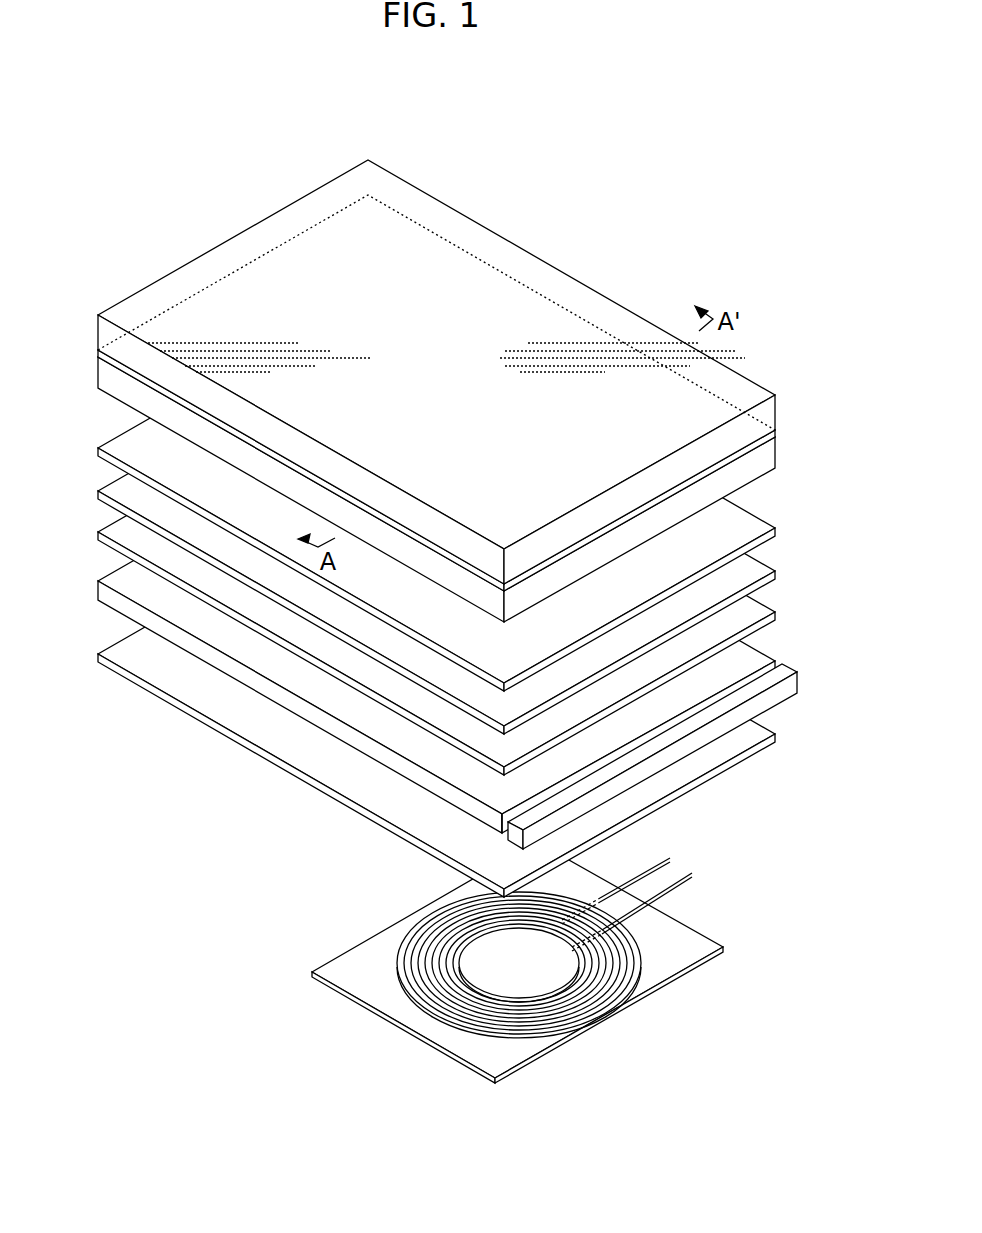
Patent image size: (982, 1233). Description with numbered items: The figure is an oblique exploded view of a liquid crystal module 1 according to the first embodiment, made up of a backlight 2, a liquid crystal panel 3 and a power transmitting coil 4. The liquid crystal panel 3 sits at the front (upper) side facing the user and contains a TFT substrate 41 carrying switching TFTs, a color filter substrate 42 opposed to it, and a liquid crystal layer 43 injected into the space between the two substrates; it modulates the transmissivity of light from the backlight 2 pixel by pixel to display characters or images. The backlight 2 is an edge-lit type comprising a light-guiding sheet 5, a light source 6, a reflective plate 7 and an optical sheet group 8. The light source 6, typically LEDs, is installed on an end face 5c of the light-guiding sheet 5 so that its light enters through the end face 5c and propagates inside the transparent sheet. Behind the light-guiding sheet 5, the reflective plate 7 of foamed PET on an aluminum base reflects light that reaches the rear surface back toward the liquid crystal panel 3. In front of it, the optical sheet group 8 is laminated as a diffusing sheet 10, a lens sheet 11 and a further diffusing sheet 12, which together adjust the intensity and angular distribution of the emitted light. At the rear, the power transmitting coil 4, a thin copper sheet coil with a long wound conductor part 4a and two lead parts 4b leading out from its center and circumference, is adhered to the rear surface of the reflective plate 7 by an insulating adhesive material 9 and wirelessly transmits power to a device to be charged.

The liquid crystal module 1 is at (431, 127).
The backlight 2 is at (422, 595).
The liquid crystal panel 3 is at (441, 391).
The power transmitting coil 4 is at (605, 958).
The conductor part 4a is at (603, 983).
The lead parts 4b is at (687, 885).
The light-guiding sheet 5 is at (419, 662).
The end face 5c is at (512, 835).
The light source 6 is at (693, 742).
The reflective plate 7 is at (130, 648).
The optical sheet group 8 is at (395, 534).
The adhesive material 9 is at (362, 967).
The diffusing sheet 10 is at (123, 532).
The lens sheet 11 is at (122, 488).
The diffusing sheet 12 is at (51, 528).
The TFT substrate 41 is at (108, 379).
The color filter substrate 42 is at (108, 336).
The liquid crystal layer 43 is at (108, 368).